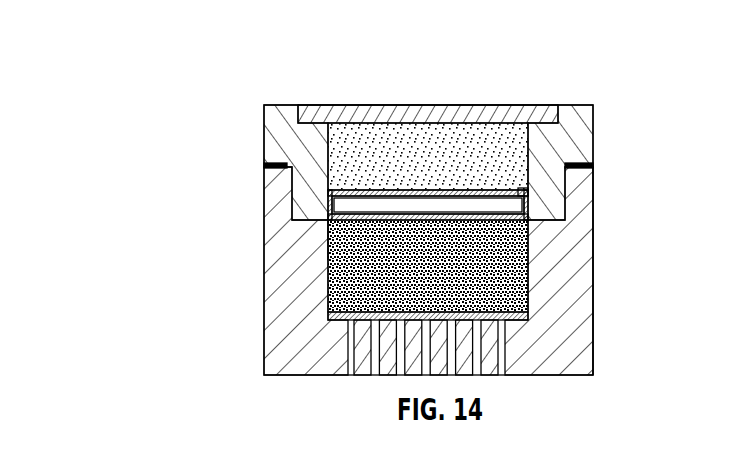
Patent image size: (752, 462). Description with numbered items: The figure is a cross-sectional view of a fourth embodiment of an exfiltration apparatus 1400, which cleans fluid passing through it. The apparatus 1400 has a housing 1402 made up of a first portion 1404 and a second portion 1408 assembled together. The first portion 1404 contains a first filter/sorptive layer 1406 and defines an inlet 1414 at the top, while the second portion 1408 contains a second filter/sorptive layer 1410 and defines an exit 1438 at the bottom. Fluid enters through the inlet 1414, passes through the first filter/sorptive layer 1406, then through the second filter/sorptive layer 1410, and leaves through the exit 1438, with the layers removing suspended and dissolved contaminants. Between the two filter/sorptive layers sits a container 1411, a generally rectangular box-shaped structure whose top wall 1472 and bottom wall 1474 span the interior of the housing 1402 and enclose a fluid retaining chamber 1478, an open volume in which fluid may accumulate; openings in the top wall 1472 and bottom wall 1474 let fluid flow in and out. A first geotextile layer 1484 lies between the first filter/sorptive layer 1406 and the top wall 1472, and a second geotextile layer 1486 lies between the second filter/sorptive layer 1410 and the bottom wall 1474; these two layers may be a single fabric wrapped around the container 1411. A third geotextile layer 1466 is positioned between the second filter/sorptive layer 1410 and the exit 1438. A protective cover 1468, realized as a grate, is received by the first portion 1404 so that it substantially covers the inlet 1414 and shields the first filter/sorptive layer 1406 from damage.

The exfiltration apparatus 1400 is at (303, 198).
The housing 1402 is at (648, 228).
The first portion 1404 is at (583, 133).
The first filter/sorptive layer 1406 is at (493, 100).
The second portion 1408 is at (578, 355).
The second filter/sorptive layer 1410 is at (528, 293).
The container 1411 is at (527, 203).
The inlet 1414 is at (398, 85).
The exit 1438 is at (365, 394).
The third geotextile layer 1466 is at (356, 335).
The protective cover 1468 is at (497, 105).
The top wall 1472 is at (354, 165).
The bottom wall 1474 is at (530, 228).
The fluid retaining chamber 1478 is at (350, 205).
The first geotextile layer 1484 is at (376, 171).
The second geotextile layer 1486 is at (247, 241).